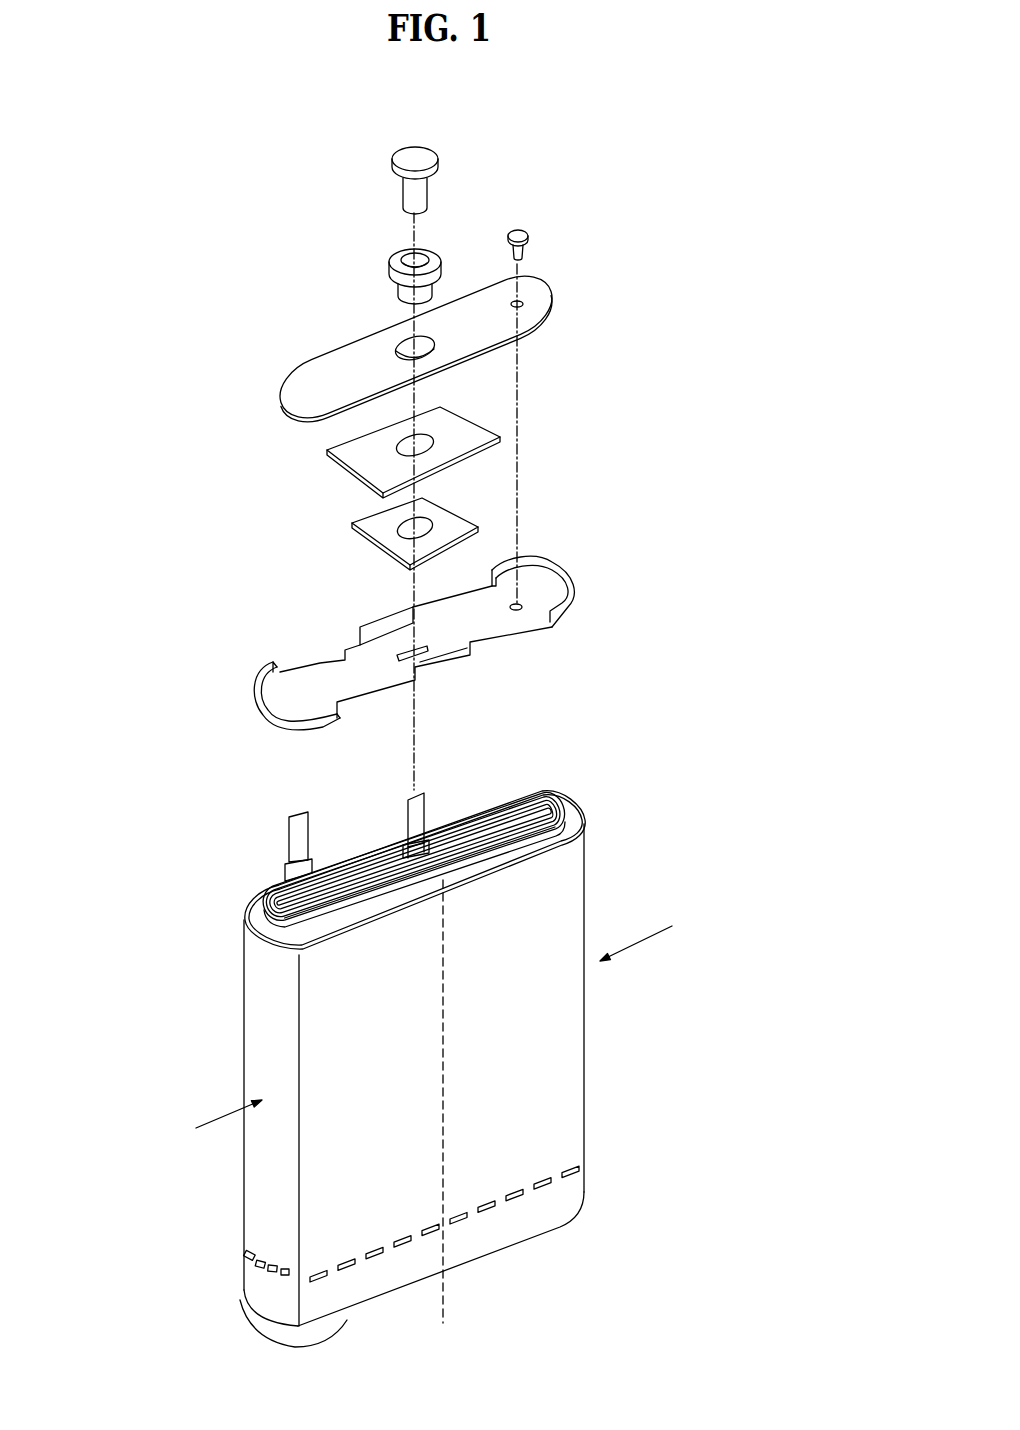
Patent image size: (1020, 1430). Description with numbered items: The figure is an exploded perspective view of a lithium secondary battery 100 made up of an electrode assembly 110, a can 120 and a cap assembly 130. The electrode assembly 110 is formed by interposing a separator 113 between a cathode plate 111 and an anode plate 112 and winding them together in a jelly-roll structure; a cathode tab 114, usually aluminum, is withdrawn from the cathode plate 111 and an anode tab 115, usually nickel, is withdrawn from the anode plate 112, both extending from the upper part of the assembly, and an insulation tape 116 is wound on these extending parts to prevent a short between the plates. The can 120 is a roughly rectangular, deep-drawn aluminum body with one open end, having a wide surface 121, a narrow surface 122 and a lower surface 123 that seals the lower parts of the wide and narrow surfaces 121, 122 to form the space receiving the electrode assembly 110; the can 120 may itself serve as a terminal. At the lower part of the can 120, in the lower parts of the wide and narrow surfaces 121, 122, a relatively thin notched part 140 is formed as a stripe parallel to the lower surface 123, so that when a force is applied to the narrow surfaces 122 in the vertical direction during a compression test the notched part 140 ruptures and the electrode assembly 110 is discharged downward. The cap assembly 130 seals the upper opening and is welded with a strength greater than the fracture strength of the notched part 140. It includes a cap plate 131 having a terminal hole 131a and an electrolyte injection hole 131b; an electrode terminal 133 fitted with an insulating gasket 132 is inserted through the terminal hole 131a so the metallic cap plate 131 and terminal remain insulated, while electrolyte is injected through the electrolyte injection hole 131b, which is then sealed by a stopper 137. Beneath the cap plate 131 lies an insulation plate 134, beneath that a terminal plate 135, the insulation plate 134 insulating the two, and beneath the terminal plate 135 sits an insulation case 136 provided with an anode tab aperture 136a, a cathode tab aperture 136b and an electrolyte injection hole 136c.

The secondary battery 100 is at (205, 114).
The electrode assembly 110 is at (631, 749).
The cathode plate 111 is at (545, 797).
The anode plate 112 is at (563, 795).
The separator 113 is at (552, 795).
The cathode tab 114 is at (310, 833).
The anode tab 115 is at (407, 813).
The insulation tape 116 is at (435, 838).
The can 120 is at (166, 1183).
The wide surface 121 is at (313, 1208).
The narrow surface 122 is at (245, 1191).
The lower surface 123 is at (240, 1300).
The cap assembly 130 is at (612, 171).
The cap plate 131 is at (507, 327).
The terminal hole 131a is at (437, 353).
The electrolyte injection hole 131b is at (523, 300).
The gasket 132 is at (400, 258).
The electrode terminal 133 is at (405, 157).
The insulation plate 134 is at (357, 460).
The terminal plate 135 is at (378, 532).
The insulation case 136 is at (252, 646).
The anode tab aperture 136a is at (405, 652).
The cathode tab aperture 136b is at (328, 663).
The electrolyte injection hole 136c is at (521, 603).
The stopper 137 is at (521, 228).
The notched part 140 is at (592, 1157).